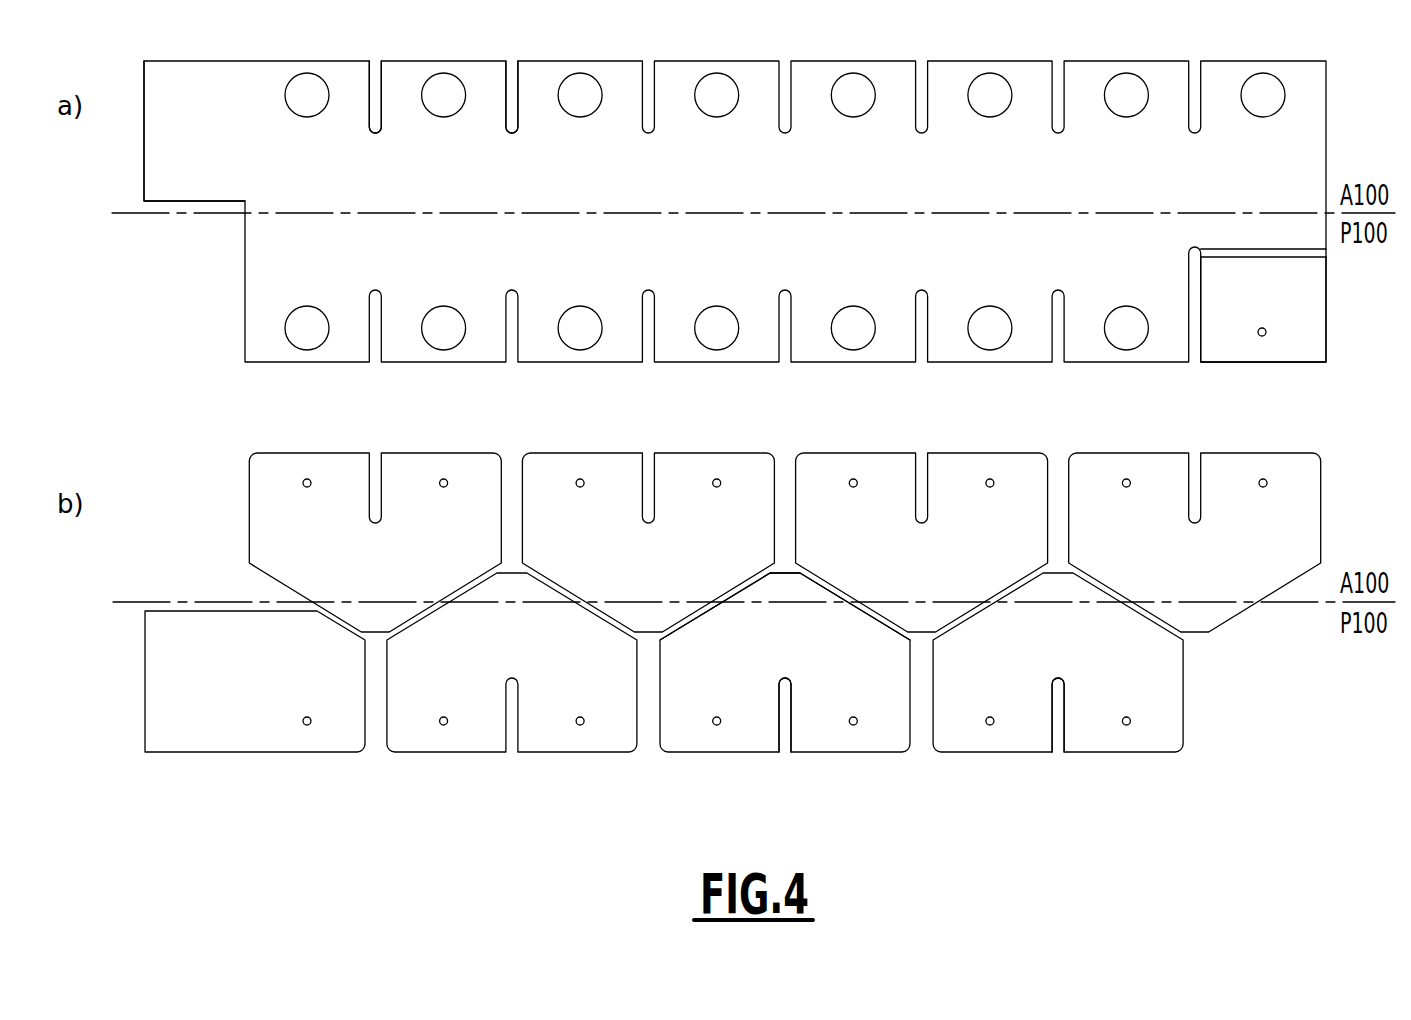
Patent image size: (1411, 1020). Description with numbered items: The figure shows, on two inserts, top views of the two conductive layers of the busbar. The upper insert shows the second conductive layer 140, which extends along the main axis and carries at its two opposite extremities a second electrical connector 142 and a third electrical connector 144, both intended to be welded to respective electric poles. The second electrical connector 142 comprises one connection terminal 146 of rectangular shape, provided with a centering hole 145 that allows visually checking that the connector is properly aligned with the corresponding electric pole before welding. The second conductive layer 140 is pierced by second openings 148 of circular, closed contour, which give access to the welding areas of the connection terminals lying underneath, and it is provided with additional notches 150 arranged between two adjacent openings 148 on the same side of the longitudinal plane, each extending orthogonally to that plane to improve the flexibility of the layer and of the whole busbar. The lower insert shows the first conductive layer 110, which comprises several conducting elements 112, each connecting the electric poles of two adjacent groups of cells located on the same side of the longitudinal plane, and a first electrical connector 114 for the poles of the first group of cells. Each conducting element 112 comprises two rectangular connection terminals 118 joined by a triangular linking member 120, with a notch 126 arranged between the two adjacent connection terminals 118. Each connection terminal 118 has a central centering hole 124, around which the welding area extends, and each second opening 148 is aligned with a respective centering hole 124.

The first conductive layer 110 is at (743, 626).
The conducting element 112 is at (277, 523).
The first electrical connector 114 is at (168, 655).
The connection terminal 118 is at (807, 737).
The linking member 120 is at (888, 575).
The centering hole 124 is at (1147, 731).
The notch 126 is at (1062, 770).
The second conductive layer 140 is at (1360, 100).
The second electrical connector 142 is at (1295, 275).
The third electrical connector 144 is at (190, 137).
The centering hole 145 is at (1245, 348).
The connection terminal 146 is at (1296, 333).
The second opening 148 is at (593, 308).
The additional notch 150 is at (506, 45).